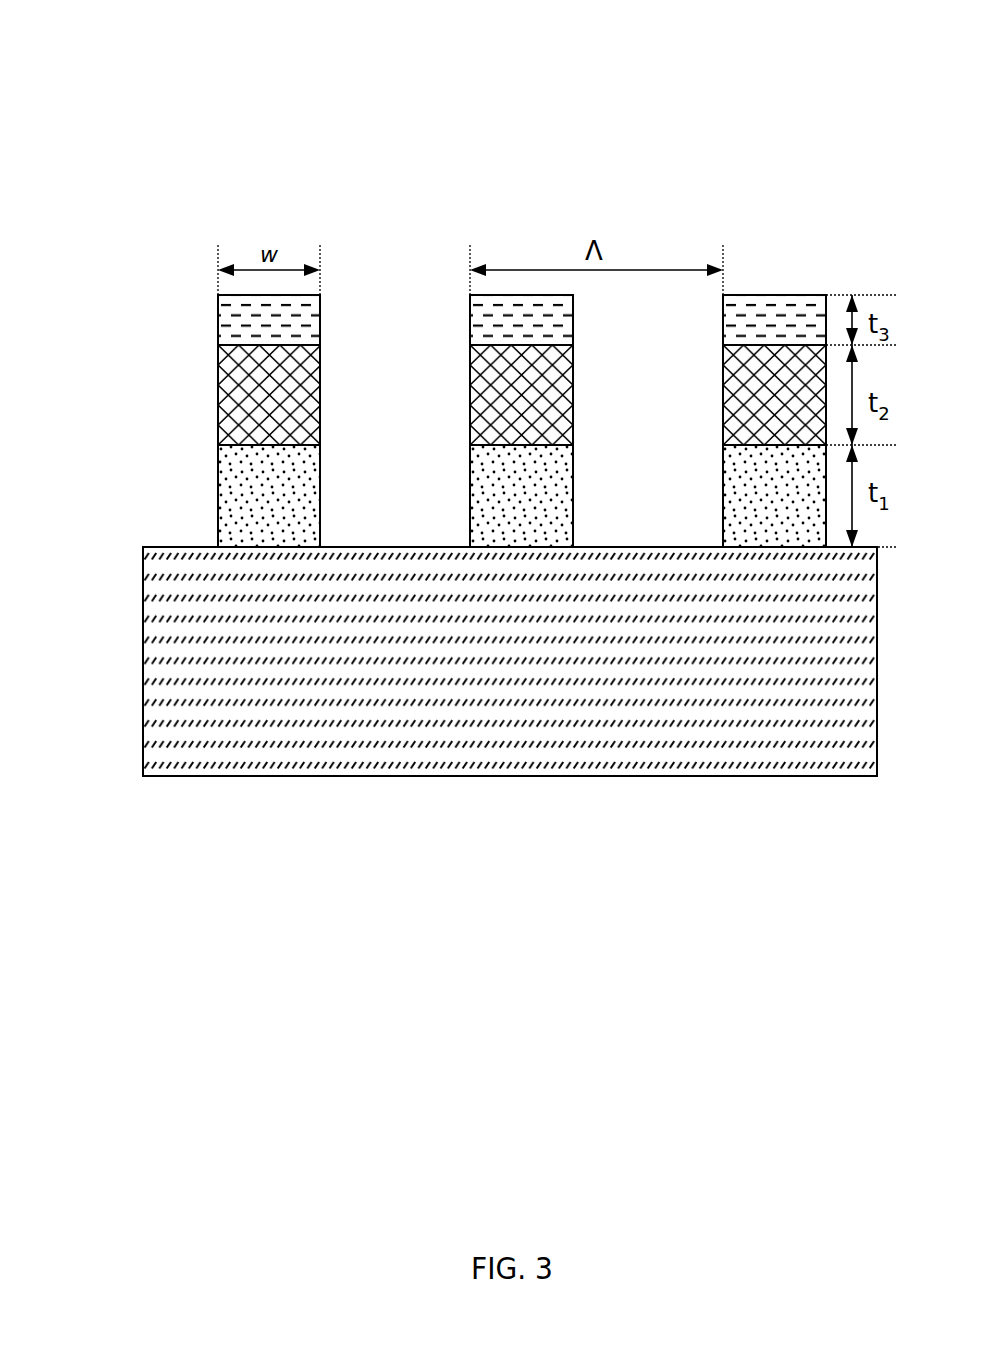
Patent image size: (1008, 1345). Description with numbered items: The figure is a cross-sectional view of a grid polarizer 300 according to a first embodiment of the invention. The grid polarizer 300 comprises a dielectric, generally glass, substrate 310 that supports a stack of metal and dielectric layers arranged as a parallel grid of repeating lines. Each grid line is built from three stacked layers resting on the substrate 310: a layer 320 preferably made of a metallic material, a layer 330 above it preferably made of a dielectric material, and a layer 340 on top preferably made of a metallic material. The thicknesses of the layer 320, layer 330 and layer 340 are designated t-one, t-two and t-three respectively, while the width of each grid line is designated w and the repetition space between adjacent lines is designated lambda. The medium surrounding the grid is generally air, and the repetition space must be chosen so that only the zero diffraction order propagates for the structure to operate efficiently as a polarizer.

The grid polarizer 300 is at (384, 136).
The substrate 310 is at (158, 760).
The layer 320 is at (205, 497).
The layer 330 is at (203, 391).
The layer 340 is at (205, 323).